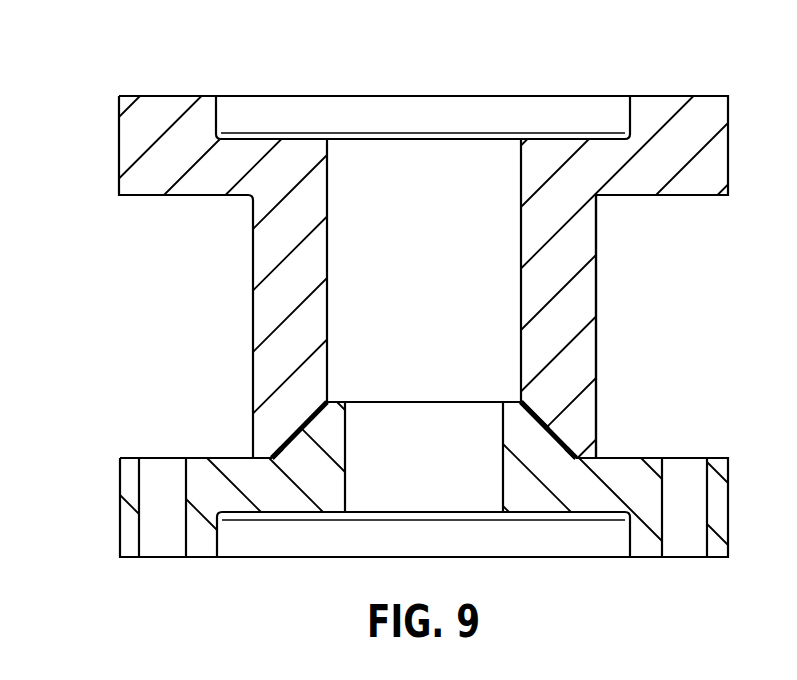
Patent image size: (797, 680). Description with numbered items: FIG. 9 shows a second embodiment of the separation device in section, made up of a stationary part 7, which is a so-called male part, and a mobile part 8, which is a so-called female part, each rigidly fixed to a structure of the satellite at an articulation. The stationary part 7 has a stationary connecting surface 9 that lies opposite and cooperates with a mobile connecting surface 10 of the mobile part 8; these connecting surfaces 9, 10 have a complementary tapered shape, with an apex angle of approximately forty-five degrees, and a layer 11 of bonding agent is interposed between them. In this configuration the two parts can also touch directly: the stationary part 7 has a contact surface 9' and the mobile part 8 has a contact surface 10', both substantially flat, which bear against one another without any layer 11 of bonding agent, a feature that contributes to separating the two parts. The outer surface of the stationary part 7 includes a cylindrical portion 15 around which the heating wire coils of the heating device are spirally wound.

The stationary part 7 is at (678, 90).
The mobile part 8 is at (110, 513).
The stationary connecting surface 9 is at (299, 510).
The contact surface 9' is at (237, 431).
The mobile connecting surface 10 is at (593, 425).
The contact surface 10' is at (586, 532).
The layer of bonding agent 11 is at (551, 403).
The cylindrical portion 15 is at (597, 288).